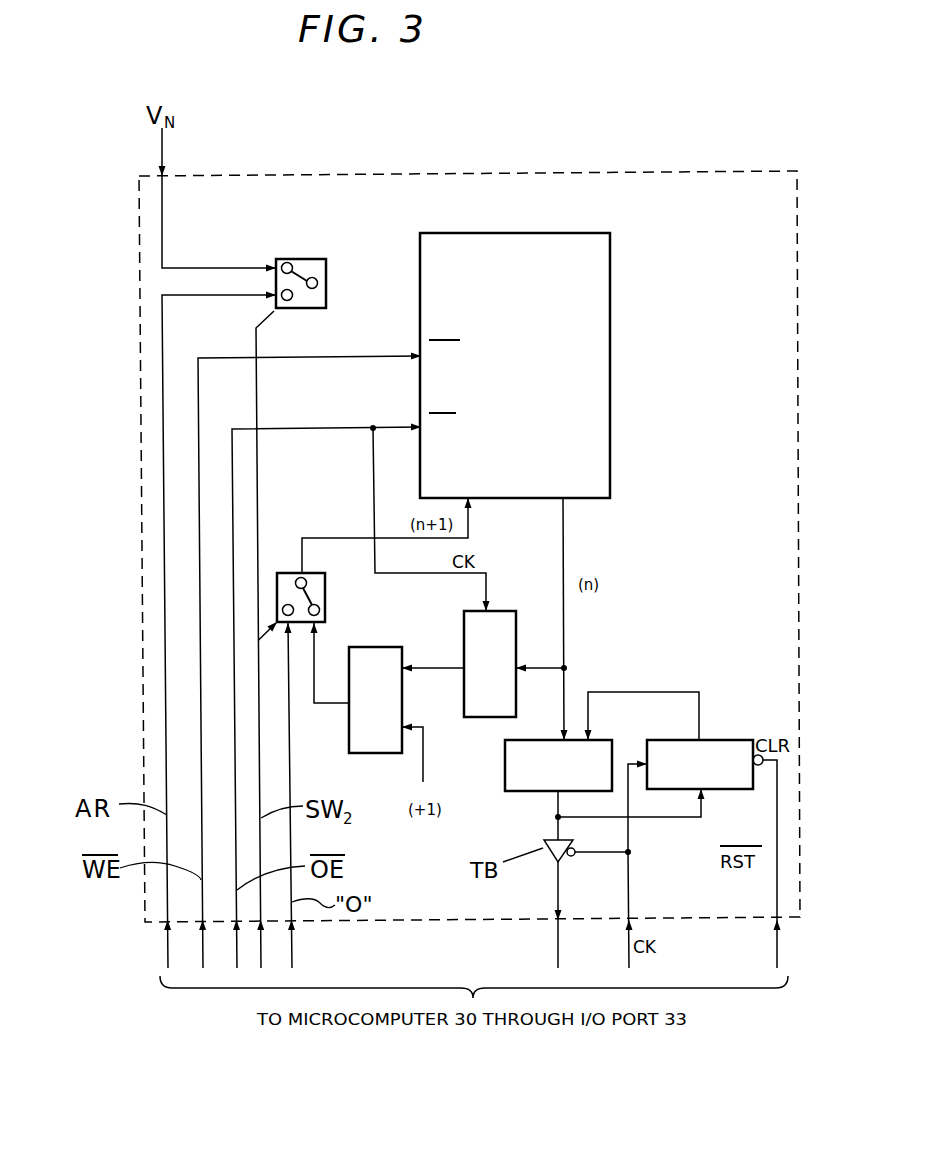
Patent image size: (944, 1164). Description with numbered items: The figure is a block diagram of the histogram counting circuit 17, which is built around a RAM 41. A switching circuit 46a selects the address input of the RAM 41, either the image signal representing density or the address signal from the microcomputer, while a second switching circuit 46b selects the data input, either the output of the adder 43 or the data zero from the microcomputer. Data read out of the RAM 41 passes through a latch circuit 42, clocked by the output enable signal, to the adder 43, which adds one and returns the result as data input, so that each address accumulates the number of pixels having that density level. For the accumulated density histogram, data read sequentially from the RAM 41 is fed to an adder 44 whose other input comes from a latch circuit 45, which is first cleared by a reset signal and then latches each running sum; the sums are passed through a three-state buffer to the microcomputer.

The histogram counting circuit 17 is at (637, 172).
The RAM 41 is at (578, 232).
The latch circuit 42 is at (497, 611).
The adder 43 is at (375, 647).
The adder 44 is at (598, 740).
The latch circuit 45 is at (717, 740).
The switching circuit 46a is at (318, 259).
The switching circuit 46b is at (325, 617).